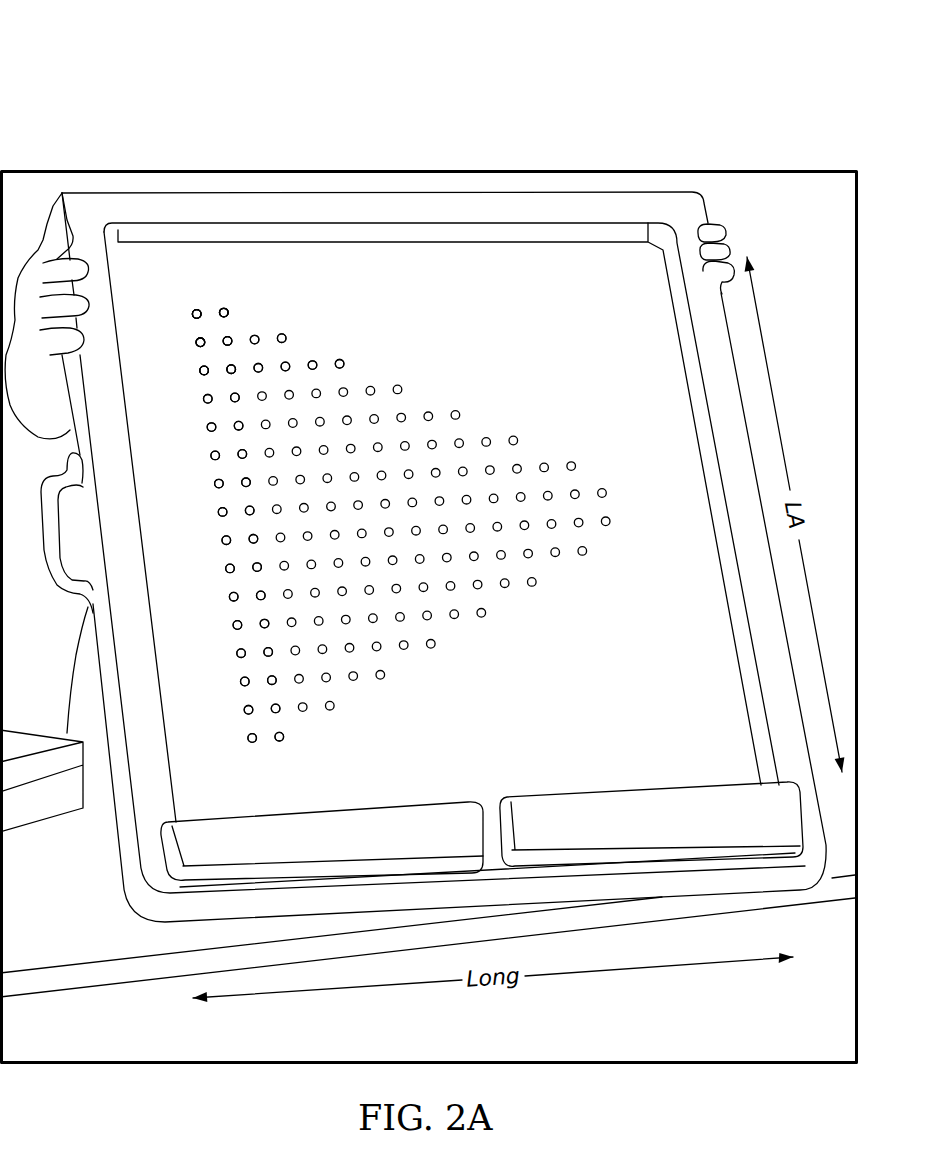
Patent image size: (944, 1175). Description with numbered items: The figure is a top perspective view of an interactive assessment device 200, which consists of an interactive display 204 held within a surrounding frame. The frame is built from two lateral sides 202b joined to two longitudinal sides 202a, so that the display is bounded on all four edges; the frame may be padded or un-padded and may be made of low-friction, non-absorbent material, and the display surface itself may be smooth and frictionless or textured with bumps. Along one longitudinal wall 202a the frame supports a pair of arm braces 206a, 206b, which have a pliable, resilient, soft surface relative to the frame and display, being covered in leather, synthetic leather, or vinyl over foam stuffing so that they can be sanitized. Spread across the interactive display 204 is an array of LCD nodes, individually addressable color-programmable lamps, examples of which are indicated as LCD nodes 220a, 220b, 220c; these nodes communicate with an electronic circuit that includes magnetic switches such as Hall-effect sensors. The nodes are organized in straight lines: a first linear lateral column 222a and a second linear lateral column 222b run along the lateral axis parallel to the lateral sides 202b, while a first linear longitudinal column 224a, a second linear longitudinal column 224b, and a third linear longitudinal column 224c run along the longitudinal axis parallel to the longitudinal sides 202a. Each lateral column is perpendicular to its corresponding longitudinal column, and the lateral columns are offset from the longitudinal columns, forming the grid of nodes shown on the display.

The interactive assessment device 200 is at (114, 27).
The longitudinal side 202a is at (572, 208).
The lateral side 202b is at (740, 492).
The interactive display 204 is at (487, 268).
The arm brace 206a is at (395, 818).
The arm brace 206b is at (572, 798).
The LCD node 220a is at (191, 307).
The LCD node 220b is at (231, 315).
The LCD node 220c is at (196, 347).
The first linear lateral column 222a is at (190, 295).
The second linear lateral column 222b is at (229, 290).
The first linear longitudinal column 224a is at (178, 316).
The second linear longitudinal column 224b is at (178, 343).
The third linear longitudinal column 224c is at (180, 396).